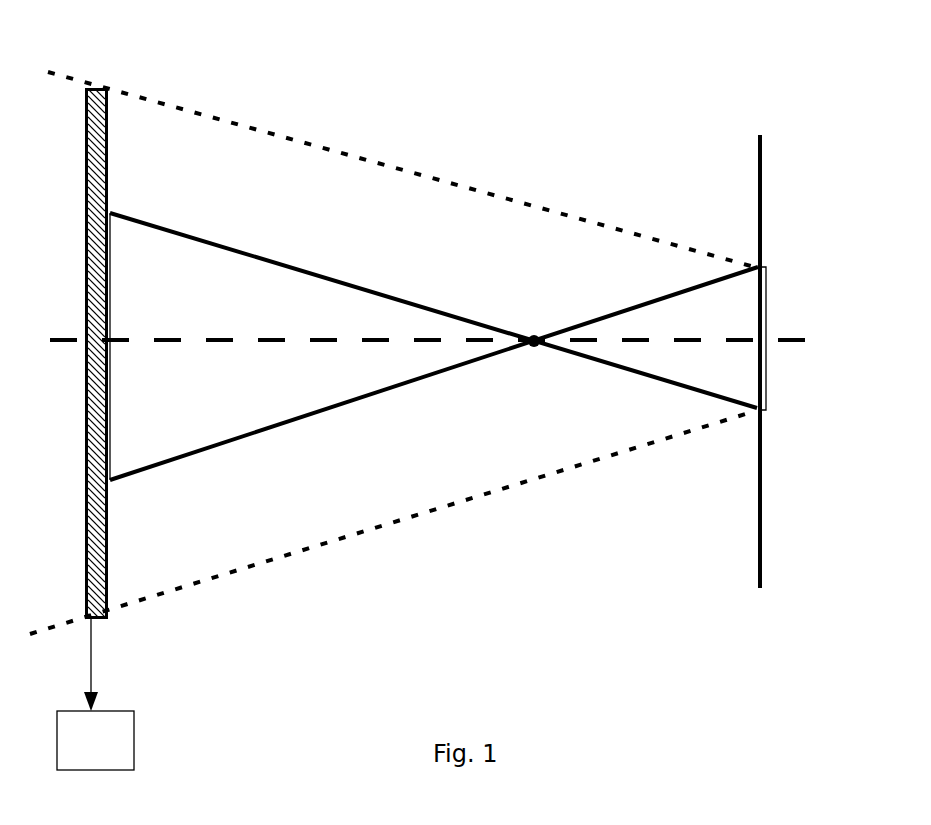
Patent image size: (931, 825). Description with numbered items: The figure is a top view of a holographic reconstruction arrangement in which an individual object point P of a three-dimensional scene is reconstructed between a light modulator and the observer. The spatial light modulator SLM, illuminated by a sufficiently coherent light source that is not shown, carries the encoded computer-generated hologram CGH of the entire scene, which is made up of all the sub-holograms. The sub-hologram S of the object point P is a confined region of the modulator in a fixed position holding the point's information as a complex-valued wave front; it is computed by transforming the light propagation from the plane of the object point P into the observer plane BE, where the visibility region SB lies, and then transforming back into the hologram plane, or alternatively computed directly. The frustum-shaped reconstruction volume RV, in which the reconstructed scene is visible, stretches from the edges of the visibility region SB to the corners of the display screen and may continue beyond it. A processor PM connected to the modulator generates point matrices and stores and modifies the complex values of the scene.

The spatial light modulator SLM is at (118, 576).
The computer-generated hologram CGH is at (107, 128).
The sub-hologram S is at (113, 432).
The reconstruction volume RV is at (387, 185).
The object point P is at (533, 320).
The observer plane BE is at (756, 452).
The visibility region SB is at (772, 355).
The processor PM is at (95, 694).